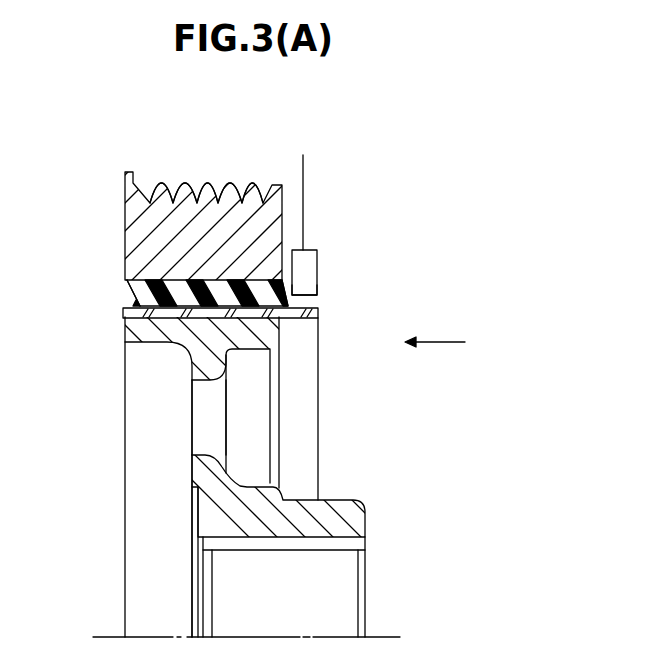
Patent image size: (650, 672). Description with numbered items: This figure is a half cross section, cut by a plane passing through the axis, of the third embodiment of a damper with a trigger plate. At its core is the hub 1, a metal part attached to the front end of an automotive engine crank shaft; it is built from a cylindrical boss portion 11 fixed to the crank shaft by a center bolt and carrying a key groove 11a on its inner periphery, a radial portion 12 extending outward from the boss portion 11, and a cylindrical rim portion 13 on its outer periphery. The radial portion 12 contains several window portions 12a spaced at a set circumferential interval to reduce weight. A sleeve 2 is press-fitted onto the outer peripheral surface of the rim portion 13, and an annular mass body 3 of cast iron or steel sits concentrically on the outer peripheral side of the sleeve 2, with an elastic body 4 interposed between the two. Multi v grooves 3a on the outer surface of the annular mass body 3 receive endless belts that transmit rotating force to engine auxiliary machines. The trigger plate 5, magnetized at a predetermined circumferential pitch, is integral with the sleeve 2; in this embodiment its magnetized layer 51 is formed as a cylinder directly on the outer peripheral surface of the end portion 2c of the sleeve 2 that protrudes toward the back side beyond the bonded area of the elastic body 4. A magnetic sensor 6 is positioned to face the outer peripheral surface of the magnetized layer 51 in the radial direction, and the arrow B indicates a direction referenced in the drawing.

The hub 1 is at (188, 481).
The sleeve 2 is at (184, 297).
The end portion 2c is at (293, 320).
The annular mass body 3 is at (189, 228).
The multi v grooves 3a is at (218, 200).
The elastic body 4 is at (128, 296).
The trigger plate 5 is at (321, 313).
The magnetic sensor 6 is at (312, 267).
The magnetized layer 51 is at (311, 290).
The boss portion 11 is at (340, 515).
The key groove 11a is at (310, 542).
The radial portion 12 is at (197, 373).
The window portions 12a is at (200, 416).
The rim portion 13 is at (158, 337).
The direction B is at (448, 344).